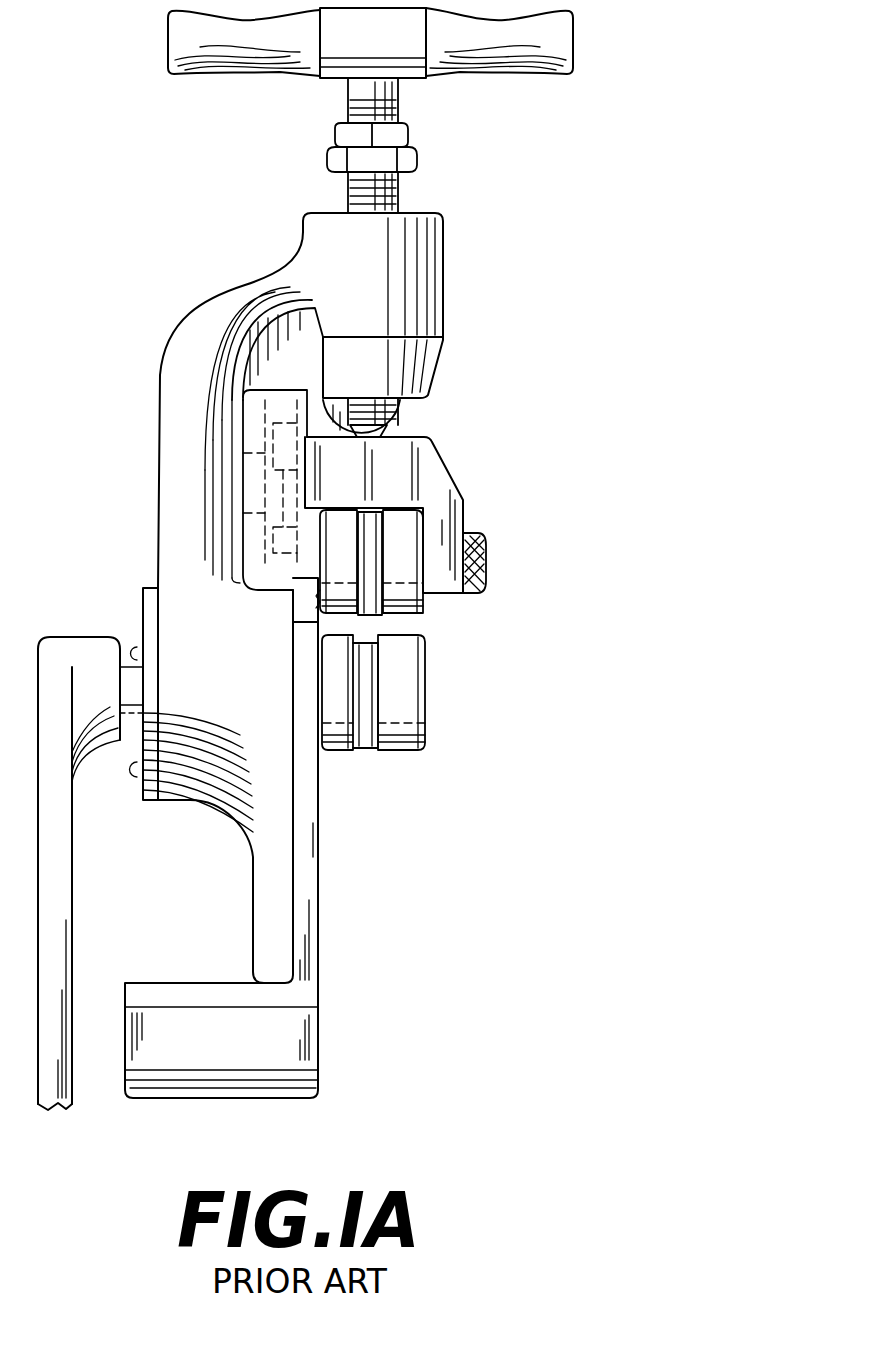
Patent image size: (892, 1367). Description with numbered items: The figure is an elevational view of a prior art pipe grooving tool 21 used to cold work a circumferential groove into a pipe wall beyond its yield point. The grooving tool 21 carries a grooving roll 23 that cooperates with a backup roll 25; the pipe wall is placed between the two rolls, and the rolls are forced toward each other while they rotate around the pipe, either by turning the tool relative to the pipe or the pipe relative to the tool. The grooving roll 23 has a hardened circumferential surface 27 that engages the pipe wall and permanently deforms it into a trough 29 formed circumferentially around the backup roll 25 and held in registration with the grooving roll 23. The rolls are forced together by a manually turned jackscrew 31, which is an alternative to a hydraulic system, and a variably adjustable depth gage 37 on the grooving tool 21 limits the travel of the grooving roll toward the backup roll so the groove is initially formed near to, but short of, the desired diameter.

The grooving tool 21 is at (305, 559).
The grooving roll 23 is at (400, 567).
The backup roll 25 is at (403, 687).
The hardened circumferential surface 27 is at (372, 609).
The trough 29 is at (369, 722).
The jackscrew 31 is at (398, 198).
The depth gage 37 is at (327, 160).